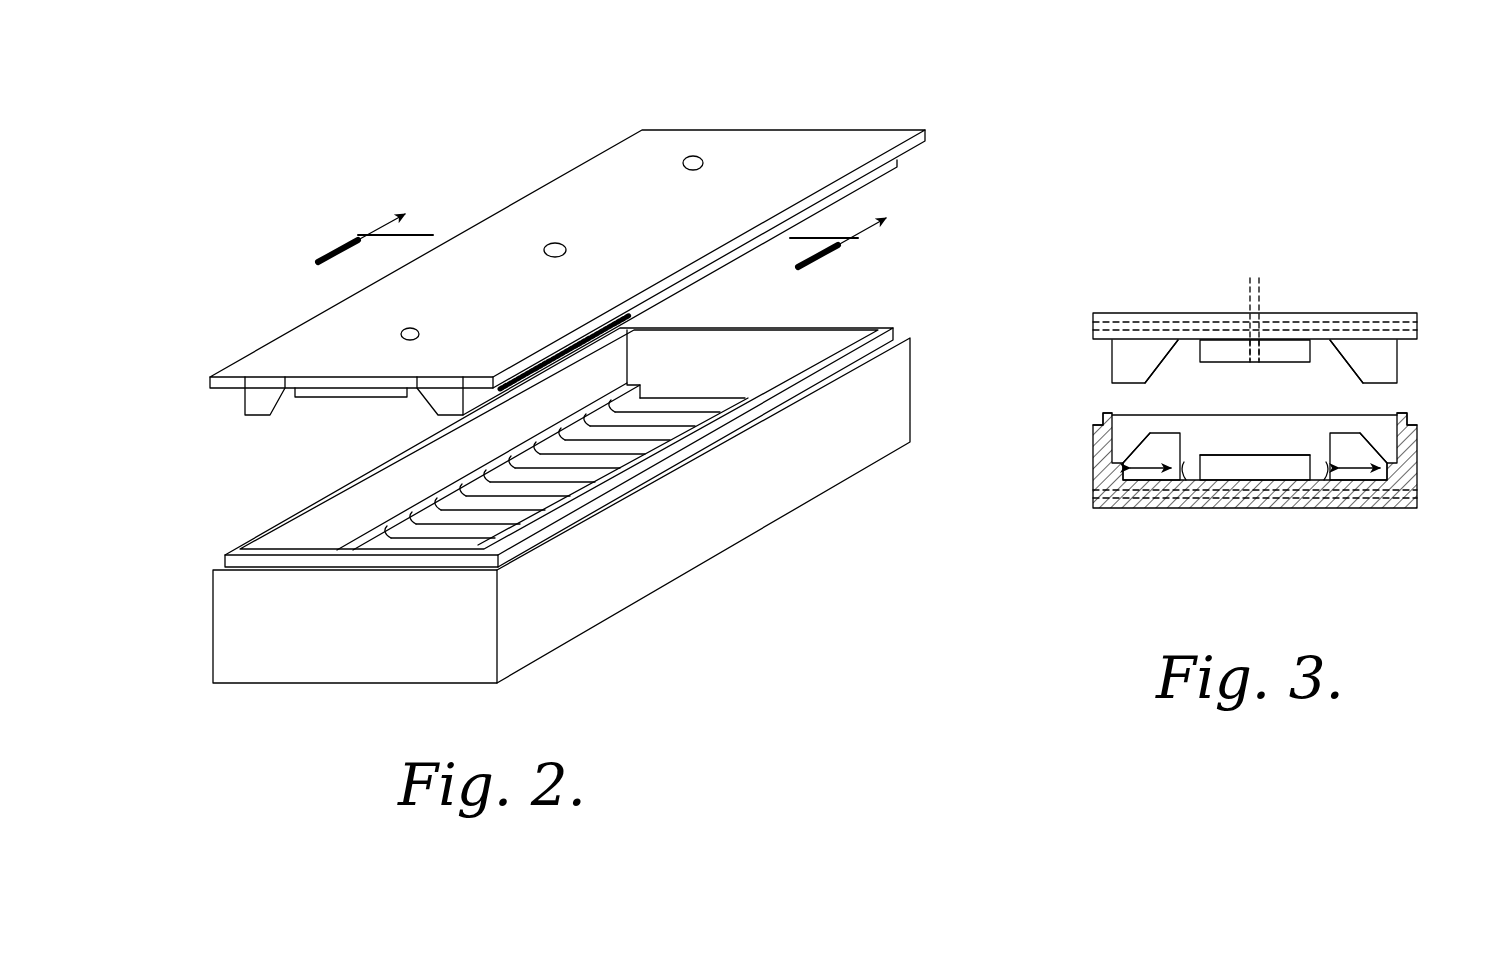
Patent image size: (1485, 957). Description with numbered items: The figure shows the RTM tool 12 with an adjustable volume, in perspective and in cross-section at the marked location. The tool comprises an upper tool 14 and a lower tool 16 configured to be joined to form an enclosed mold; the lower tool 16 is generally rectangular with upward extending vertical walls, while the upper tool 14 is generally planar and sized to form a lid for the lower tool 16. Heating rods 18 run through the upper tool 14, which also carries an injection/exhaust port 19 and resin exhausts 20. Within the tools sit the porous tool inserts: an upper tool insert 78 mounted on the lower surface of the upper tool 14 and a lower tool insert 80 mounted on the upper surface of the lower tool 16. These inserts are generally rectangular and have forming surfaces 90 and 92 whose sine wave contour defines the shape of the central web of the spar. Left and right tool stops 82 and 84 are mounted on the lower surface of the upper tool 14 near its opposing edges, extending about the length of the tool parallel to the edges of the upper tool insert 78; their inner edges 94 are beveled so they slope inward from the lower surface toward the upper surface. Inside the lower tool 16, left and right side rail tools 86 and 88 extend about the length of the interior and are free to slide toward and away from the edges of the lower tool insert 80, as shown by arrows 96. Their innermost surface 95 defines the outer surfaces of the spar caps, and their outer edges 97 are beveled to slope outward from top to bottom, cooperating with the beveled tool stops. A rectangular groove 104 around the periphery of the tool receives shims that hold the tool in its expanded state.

In FIG. 2, the RTM tool 12 is at (964, 97).
In FIG. 2, the upper tool 14 is at (207, 378).
In FIG. 3, the upper tool 14 is at (1145, 306).
In FIG. 2, the lower tool 16 is at (662, 597).
In FIG. 3, the heating rods 18 is at (1417, 320).
In FIG. 2, the injection/exhaust port 19 is at (556, 243).
In FIG. 3, the injection/exhaust port 19 is at (1249, 305).
In FIG. 2, the resin exhausts 20 is at (693, 156).
In FIG. 2, the upper tool insert 78 is at (345, 398).
In FIG. 3, the upper tool insert 78 is at (1290, 348).
In FIG. 2, the lower tool insert 80 is at (786, 358).
In FIG. 3, the lower tool insert 80 is at (1268, 470).
In FIG. 2, the left tool stop 82 is at (270, 405).
In FIG. 3, the left tool stop 82 is at (1115, 360).
In FIG. 2, the right tool stop 84 is at (437, 406).
In FIG. 3, the right tool stop 84 is at (1372, 350).
In FIG. 2, the left side rail tool 86 is at (378, 540).
In FIG. 3, the left side rail tool 86 is at (1125, 480).
In FIG. 3, the right side rail tool 88 is at (1390, 480).
In FIG. 3, the forming surface 90 is at (1258, 360).
In FIG. 2, the forming surface 92 is at (663, 413).
In FIG. 3, the forming surface 92 is at (1222, 455).
In FIG. 3, the inner edges 94 is at (1160, 368).
In FIG. 3, the innermost surface 95 is at (1187, 462).
In FIG. 3, the arrows 96 is at (1150, 472).
In FIG. 3, the outer edges 97 is at (1134, 447).
In FIG. 3, the rectangular groove 104 is at (1103, 420).